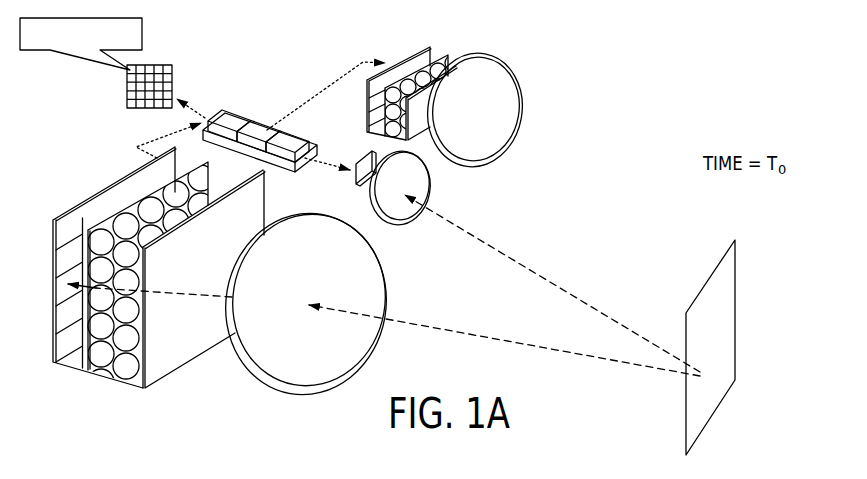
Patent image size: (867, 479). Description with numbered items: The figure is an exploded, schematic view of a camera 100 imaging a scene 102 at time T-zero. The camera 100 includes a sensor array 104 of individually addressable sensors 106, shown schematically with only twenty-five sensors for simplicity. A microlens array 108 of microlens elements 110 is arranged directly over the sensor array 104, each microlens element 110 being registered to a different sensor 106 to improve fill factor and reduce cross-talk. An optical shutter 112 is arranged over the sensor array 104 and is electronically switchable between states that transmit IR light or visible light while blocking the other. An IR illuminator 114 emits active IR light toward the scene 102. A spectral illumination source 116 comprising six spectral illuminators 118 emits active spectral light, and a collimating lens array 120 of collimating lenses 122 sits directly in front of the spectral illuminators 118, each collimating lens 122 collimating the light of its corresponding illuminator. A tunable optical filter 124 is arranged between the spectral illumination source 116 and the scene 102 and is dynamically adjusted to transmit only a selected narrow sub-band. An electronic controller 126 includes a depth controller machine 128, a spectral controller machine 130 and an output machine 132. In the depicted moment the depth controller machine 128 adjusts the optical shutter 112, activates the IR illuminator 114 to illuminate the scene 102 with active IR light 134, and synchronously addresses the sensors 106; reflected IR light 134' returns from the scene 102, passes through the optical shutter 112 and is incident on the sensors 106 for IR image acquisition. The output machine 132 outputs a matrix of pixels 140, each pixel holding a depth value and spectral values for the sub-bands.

The camera 100 is at (580, 72).
The scene 102 is at (732, 242).
The sensor array 104 is at (72, 210).
The sensors 106 is at (66, 257).
The microlens array 108 is at (98, 371).
The microlens element 110 is at (96, 323).
The optical shutter 112 is at (146, 389).
The IR illuminator 114 is at (366, 182).
The spectral illumination source 116 is at (388, 62).
The spectral illuminators 118 is at (388, 118).
The collimating lens array 120 is at (446, 52).
The collimating lens 122 is at (366, 164).
The tunable optical filter 124 is at (470, 49).
The electronic controller 126 is at (307, 166).
The depth controller machine 128 is at (313, 130).
The spectral controller machine 130 is at (262, 124).
The output machine 132 is at (223, 114).
The active IR light 134 is at (552, 283).
The reflected IR light 134' is at (384, 330).
The matrix of pixels 140 is at (160, 66).